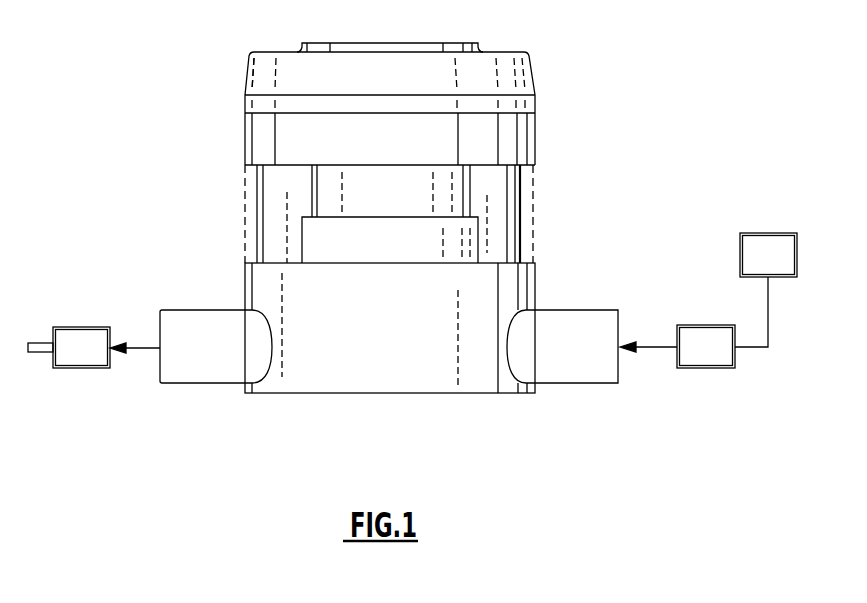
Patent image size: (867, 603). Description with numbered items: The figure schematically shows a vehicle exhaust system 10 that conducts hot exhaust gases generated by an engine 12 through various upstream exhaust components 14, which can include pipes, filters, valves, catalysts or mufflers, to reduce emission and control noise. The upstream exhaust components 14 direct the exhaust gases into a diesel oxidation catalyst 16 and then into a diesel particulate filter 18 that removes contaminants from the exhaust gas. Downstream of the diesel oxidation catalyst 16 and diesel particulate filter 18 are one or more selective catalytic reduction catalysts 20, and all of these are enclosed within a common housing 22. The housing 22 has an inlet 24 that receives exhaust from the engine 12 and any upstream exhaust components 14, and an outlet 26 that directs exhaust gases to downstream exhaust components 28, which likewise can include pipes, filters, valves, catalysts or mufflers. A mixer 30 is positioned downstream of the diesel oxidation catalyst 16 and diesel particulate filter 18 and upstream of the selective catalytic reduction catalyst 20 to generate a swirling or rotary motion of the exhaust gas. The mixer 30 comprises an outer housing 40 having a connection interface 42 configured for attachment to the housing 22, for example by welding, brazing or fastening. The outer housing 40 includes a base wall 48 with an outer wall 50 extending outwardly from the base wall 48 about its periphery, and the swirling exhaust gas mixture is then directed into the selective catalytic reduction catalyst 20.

The vehicle exhaust system 10 is at (624, 111).
The engine 12 is at (768, 255).
The upstream exhaust components 14 is at (694, 322).
The diesel oxidation catalyst 16 is at (390, 240).
The diesel particulate filter 18 is at (391, 191).
The selective catalytic reduction catalyst 20 is at (273, 213).
The housing 22 is at (545, 249).
The inlet 24 is at (575, 372).
The outlet 26 is at (197, 377).
The downstream exhaust components 28 is at (94, 347).
The mixer 30 is at (231, 71).
The outer housing 40 is at (522, 78).
The connection interface 42 is at (535, 107).
The base wall 48 is at (488, 51).
The outer wall 50 is at (273, 63).